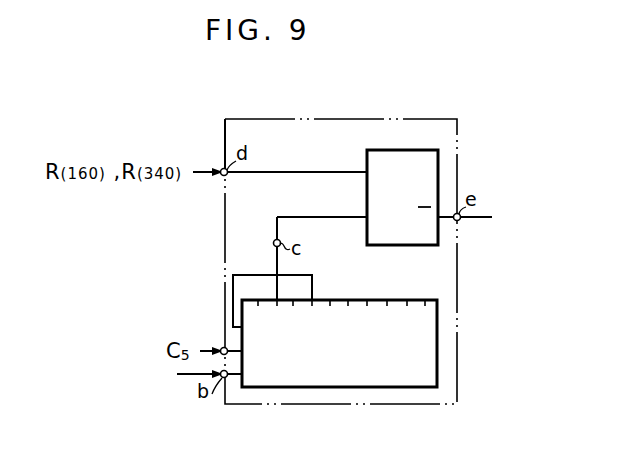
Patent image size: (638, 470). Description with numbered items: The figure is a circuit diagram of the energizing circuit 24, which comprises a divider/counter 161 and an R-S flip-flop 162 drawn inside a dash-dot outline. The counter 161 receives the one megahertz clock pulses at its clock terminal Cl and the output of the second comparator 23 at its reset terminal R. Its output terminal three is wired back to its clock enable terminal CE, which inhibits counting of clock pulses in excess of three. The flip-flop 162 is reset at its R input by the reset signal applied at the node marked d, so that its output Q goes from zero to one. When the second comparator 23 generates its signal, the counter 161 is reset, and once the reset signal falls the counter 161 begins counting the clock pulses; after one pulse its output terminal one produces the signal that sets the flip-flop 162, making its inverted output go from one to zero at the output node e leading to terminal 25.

The energizing circuit 24 is at (433, 119).
The R-S flip-flop 162 is at (410, 150).
The divider/counter 161 is at (437, 357).
The output terminal 25 is at (492, 218).
The second comparator 23 is at (176, 375).